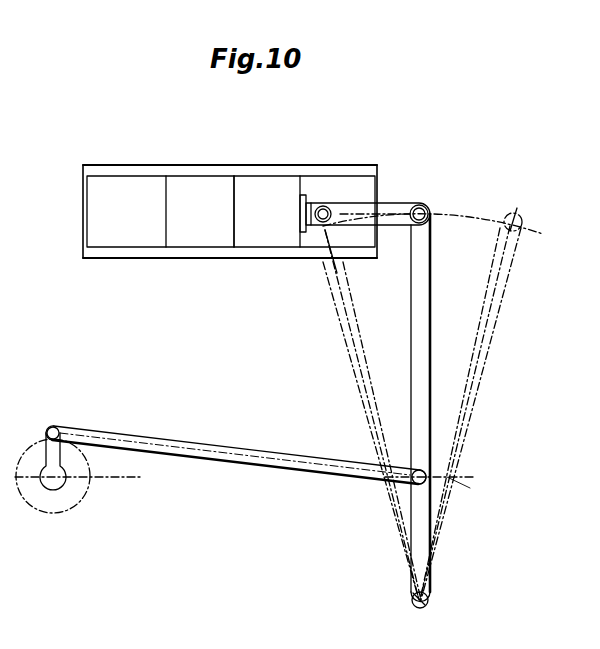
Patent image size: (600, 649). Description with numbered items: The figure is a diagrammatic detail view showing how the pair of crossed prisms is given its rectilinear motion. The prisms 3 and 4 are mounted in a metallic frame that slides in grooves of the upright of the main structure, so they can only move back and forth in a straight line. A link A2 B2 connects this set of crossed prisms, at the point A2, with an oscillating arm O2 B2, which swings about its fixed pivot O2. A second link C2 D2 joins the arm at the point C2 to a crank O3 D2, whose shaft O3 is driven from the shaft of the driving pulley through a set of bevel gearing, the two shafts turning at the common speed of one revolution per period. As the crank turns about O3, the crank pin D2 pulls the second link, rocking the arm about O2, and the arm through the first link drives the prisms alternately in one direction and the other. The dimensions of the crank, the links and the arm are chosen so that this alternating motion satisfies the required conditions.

The prism 3 is at (200, 211).
The prism 4 is at (267, 211).
The link pivot point A2 is at (325, 202).
The link and arm pivot point B2 is at (425, 202).
The second link pivot point C2 is at (434, 470).
The crank pin D2 is at (57, 418).
The arm pivot O2 is at (418, 614).
The crank shaft O3 is at (56, 480).